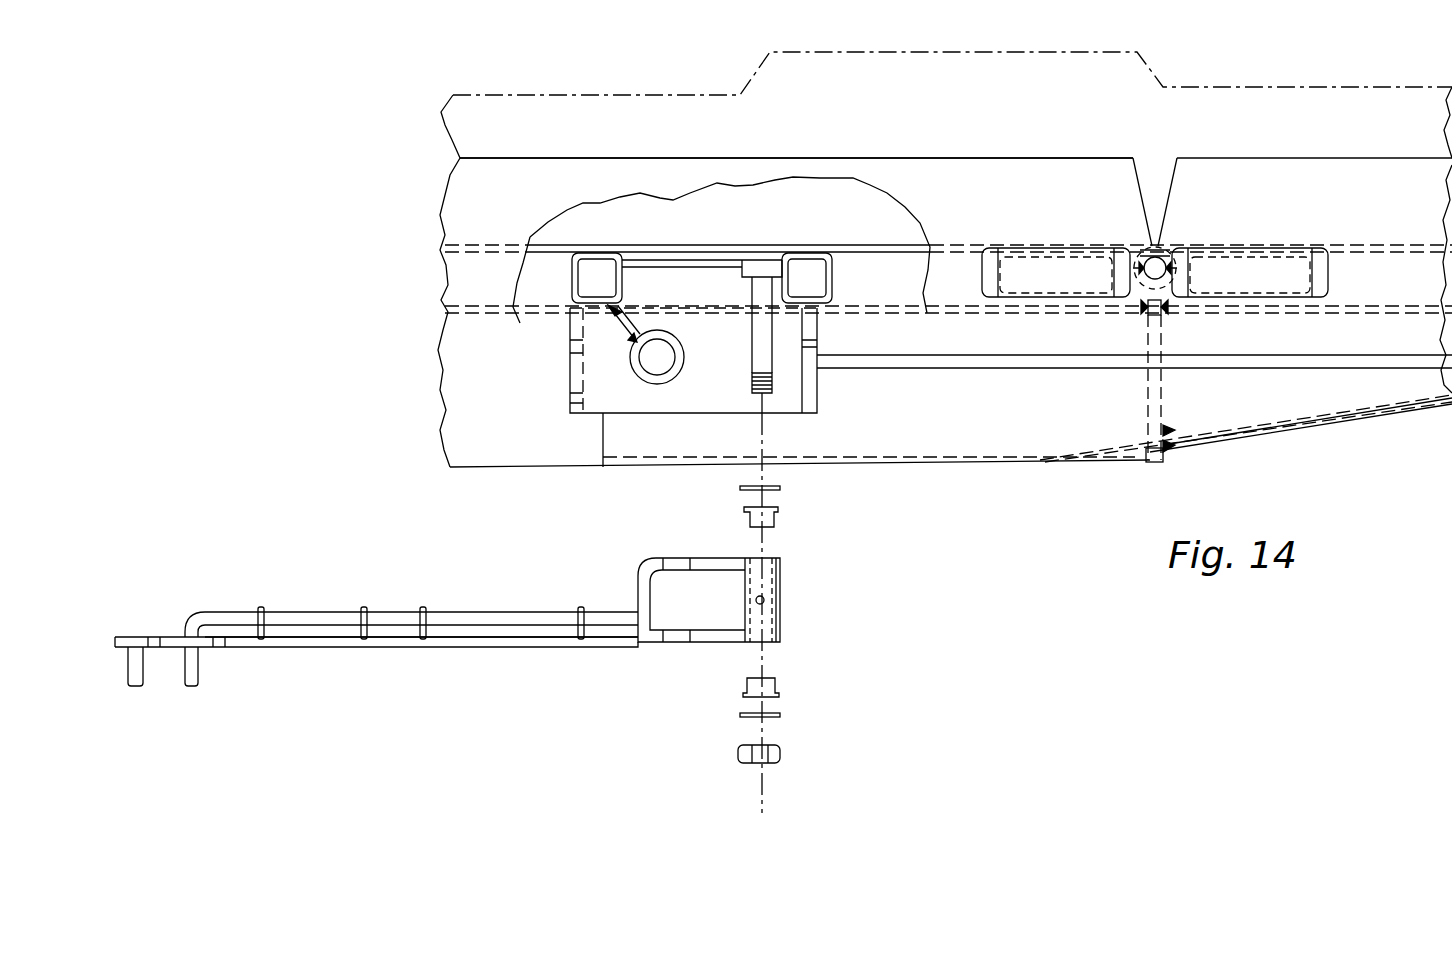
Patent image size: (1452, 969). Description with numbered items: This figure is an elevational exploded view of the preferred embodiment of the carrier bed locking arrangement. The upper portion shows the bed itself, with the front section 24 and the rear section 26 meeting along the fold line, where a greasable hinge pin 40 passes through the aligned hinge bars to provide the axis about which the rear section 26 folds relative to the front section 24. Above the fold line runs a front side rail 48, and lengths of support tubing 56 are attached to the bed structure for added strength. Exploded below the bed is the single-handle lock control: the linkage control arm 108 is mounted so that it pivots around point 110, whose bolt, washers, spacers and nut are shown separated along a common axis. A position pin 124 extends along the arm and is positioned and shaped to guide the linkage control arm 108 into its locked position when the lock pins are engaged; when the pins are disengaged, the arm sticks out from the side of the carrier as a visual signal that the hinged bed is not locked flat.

The front side rails 48 is at (918, 158).
The front section 24 is at (1082, 158).
The rear section 26 is at (1212, 158).
The greasable hinge pin 40 is at (1172, 250).
The support tubing 56 is at (622, 280).
The pivot point 110 is at (758, 348).
The position pin 124 is at (246, 612).
The linkage control arm 108 is at (438, 647).